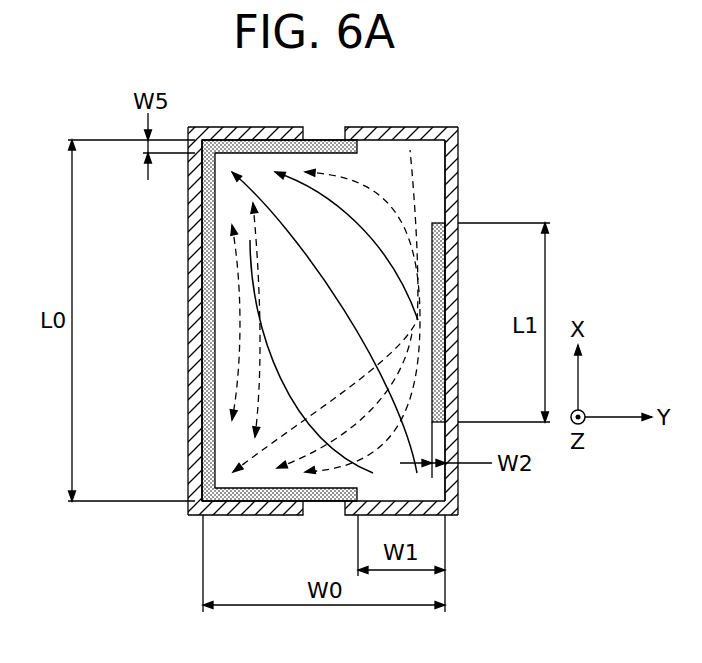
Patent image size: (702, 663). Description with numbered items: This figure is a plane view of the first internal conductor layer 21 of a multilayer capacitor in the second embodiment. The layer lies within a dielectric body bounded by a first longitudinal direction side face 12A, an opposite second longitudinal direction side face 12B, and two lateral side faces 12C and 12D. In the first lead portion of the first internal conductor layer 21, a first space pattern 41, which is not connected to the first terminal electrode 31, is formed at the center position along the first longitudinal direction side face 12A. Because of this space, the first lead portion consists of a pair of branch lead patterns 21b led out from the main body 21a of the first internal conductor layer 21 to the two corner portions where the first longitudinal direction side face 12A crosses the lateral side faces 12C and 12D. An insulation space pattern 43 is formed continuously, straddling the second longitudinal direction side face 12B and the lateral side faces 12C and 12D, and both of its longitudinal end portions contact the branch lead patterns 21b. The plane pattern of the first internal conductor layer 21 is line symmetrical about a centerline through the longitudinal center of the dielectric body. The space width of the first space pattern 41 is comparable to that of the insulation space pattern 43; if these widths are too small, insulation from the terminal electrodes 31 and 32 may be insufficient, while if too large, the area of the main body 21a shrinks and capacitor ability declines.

The first longitudinal direction side face 12A is at (455, 155).
The second longitudinal direction side face 12B is at (202, 405).
The lateral side face 12C is at (323, 517).
The lateral side face 12D is at (323, 140).
The first internal conductor layer 21 is at (440, 193).
The main body 21a is at (230, 322).
The branch lead pattern 21b is at (410, 150).
The first terminal electrode 31 is at (455, 197).
The second terminal electrode 32 is at (197, 257).
The first space pattern 41 is at (440, 367).
The insulation space pattern 43 is at (248, 127).